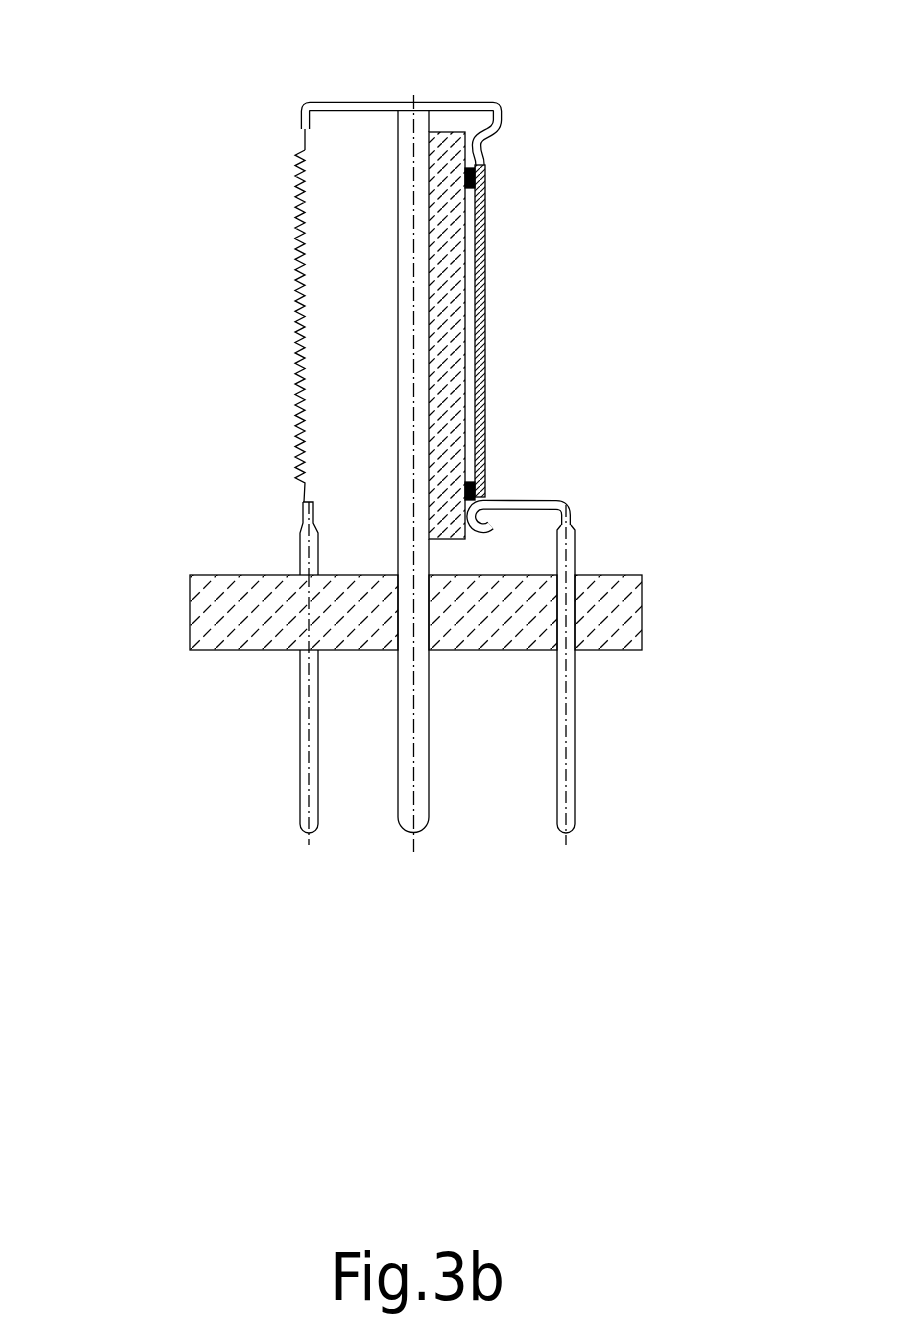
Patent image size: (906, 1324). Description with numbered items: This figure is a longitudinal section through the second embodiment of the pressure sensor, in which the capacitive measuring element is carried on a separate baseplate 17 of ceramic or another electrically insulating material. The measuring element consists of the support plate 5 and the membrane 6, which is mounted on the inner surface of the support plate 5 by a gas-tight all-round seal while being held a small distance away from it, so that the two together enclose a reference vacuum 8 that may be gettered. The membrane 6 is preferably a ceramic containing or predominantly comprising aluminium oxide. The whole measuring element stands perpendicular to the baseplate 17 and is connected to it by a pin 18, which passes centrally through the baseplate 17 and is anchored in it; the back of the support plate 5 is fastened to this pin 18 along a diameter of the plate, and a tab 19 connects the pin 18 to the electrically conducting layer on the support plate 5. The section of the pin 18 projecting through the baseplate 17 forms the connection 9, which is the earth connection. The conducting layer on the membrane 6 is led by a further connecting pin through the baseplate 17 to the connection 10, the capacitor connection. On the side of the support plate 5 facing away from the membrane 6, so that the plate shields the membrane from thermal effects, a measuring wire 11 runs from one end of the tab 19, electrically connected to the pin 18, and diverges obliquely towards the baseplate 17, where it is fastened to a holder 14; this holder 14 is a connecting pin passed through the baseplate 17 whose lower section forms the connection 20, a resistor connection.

The support plate 5 is at (447, 477).
The membrane 6 is at (482, 446).
The reference vacuum 8 is at (470, 230).
The connection 9 is at (415, 813).
The connection 10 is at (567, 813).
The measuring wire 11 is at (295, 258).
The holder 14 is at (303, 553).
The baseplate 17 is at (628, 590).
The pin 18 is at (412, 229).
The tab 19 is at (500, 108).
The connection 20 is at (310, 813).